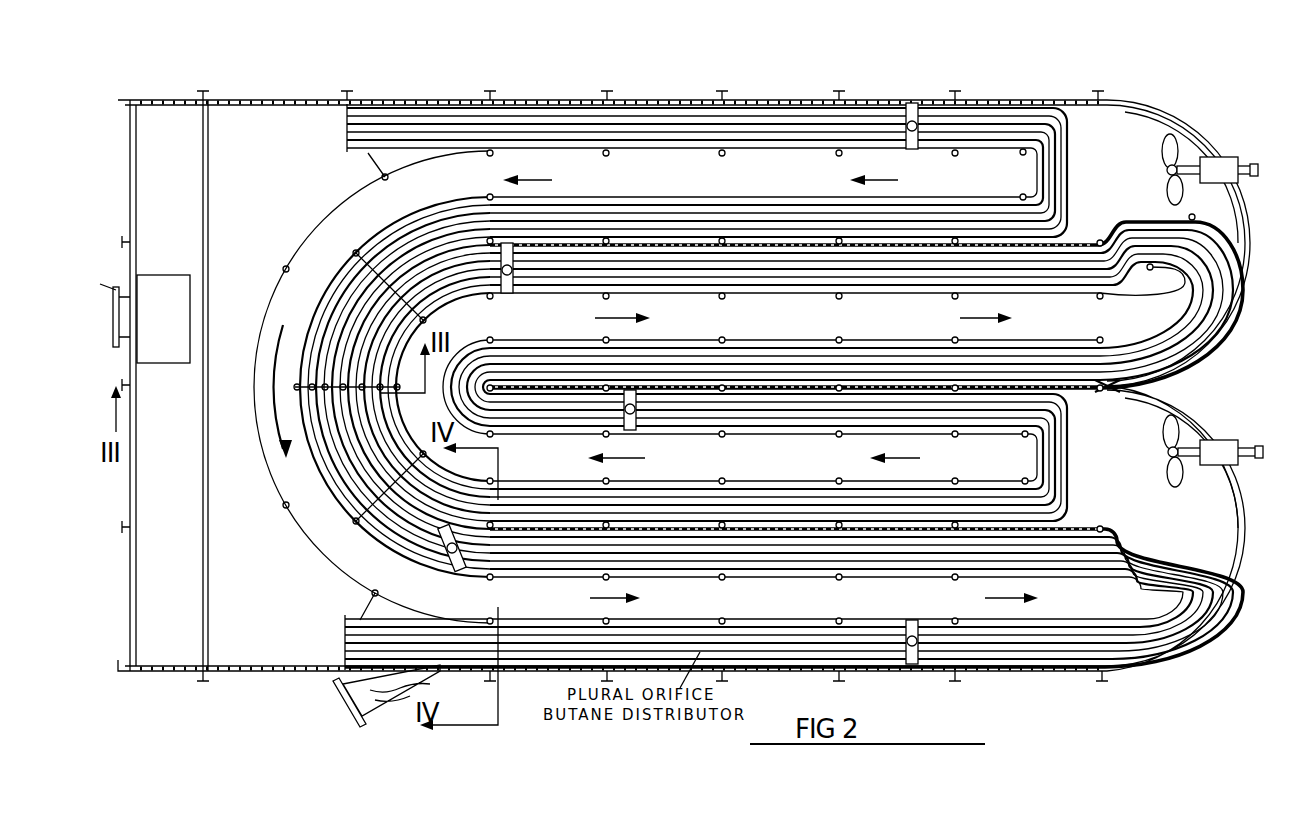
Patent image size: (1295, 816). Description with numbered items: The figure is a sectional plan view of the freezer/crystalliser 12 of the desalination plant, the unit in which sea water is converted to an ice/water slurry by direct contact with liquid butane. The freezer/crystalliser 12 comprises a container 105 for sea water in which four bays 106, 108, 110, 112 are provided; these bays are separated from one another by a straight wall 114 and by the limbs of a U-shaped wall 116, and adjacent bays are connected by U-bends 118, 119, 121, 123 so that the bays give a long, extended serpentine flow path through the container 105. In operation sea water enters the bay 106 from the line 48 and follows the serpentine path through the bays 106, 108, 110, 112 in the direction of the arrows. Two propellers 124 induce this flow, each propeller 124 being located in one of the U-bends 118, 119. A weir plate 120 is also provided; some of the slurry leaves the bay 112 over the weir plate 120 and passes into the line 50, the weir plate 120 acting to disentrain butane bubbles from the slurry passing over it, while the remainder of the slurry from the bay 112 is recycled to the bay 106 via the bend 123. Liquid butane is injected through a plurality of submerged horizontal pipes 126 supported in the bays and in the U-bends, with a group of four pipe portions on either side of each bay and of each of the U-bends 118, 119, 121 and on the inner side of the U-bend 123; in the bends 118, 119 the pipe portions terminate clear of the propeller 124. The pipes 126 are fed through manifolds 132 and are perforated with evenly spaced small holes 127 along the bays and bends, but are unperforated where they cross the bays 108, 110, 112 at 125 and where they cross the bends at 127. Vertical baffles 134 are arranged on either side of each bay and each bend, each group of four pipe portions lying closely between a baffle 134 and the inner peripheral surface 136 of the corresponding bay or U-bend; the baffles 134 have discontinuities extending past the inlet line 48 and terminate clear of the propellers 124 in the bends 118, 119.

The freezer/crystalliser 12 is at (768, 91).
The line 48 is at (372, 692).
The line 50 is at (125, 310).
The container 105 is at (1066, 110).
The bay 106 is at (787, 615).
The bay 108 is at (802, 473).
The bay 110 is at (742, 333).
The bay 112 is at (705, 192).
The straight wall 114 is at (755, 386).
The U-shaped wall 116 is at (537, 248).
The U-bend 118 is at (1130, 128).
The U-bend 119 is at (1120, 420).
The weir plate 120 is at (210, 258).
The U-bend 121 is at (470, 327).
The U-bend 123 is at (330, 522).
The propeller 124 is at (1185, 150).
The unperforated pipe region 125 is at (1143, 102).
The horizontal pipe 126 is at (635, 562).
The small holes 127 is at (1186, 215).
The manifold 132 is at (918, 117).
The vertical baffle 134 is at (752, 152).
The inner peripheral surface 136 is at (985, 106).